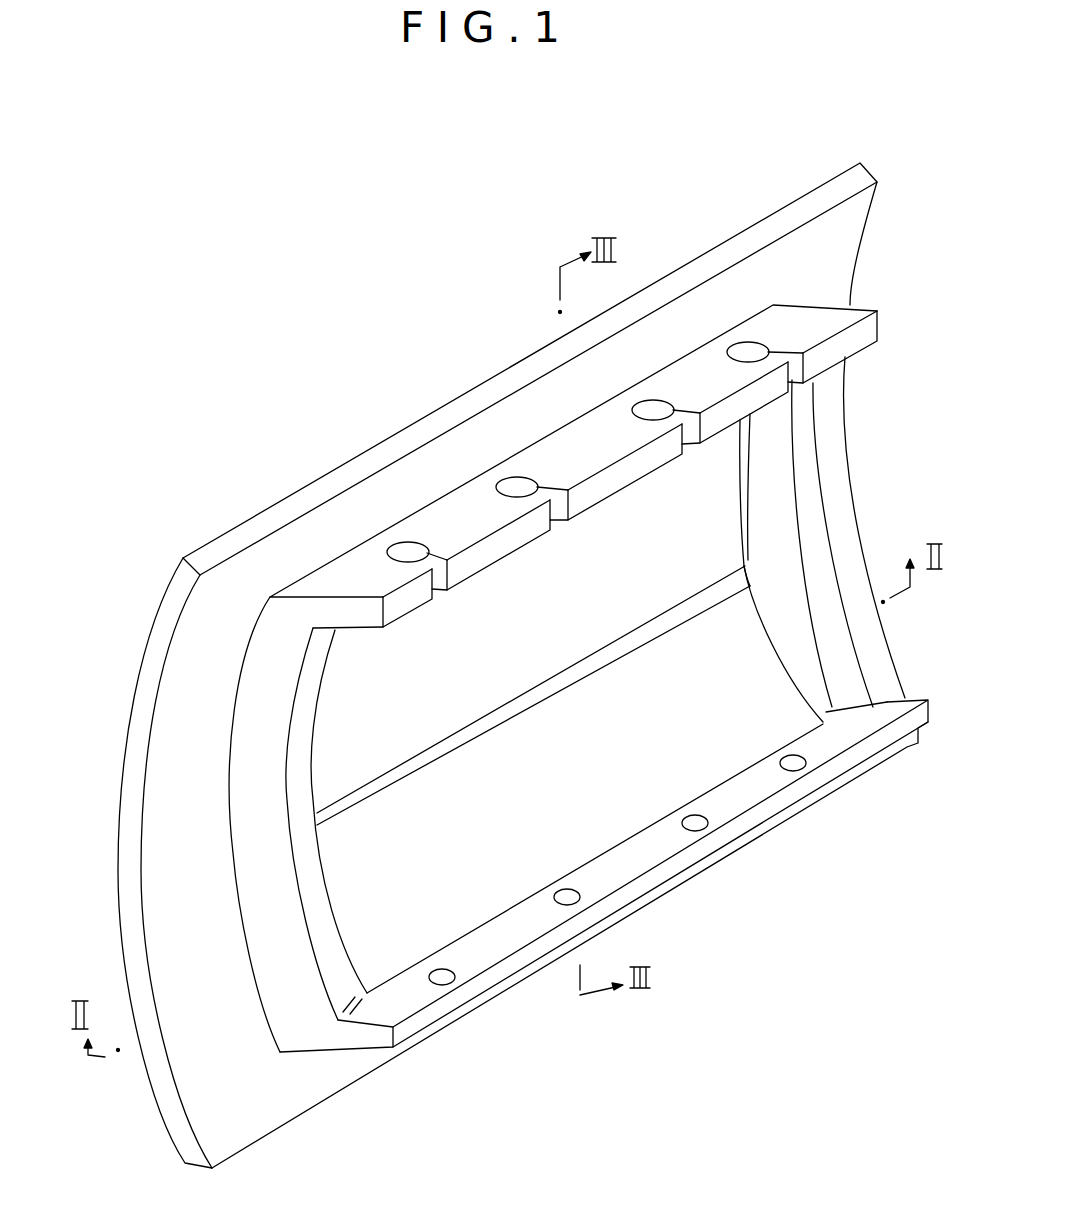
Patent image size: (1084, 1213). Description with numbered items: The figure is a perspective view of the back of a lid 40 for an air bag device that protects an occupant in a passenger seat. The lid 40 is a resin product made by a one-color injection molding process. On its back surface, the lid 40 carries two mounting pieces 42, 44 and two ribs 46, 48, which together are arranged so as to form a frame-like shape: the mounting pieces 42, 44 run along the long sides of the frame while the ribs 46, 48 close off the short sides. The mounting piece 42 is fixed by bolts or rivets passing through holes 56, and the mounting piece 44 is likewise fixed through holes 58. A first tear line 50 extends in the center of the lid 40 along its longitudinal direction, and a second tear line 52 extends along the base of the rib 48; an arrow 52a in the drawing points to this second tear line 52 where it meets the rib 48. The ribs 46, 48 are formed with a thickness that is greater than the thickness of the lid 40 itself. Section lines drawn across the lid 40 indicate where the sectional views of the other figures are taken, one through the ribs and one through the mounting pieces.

The lid 40 is at (633, 242).
The mounting piece 42 is at (553, 452).
The mounting piece 44 is at (643, 860).
The rib 46 is at (277, 920).
The rib 48 is at (782, 530).
The first tear line 50 is at (497, 727).
The second tear line 52 is at (793, 683).
The corner edge of bottom plate 52a is at (748, 592).
The holes 56 is at (400, 537).
The holes 58 is at (452, 978).